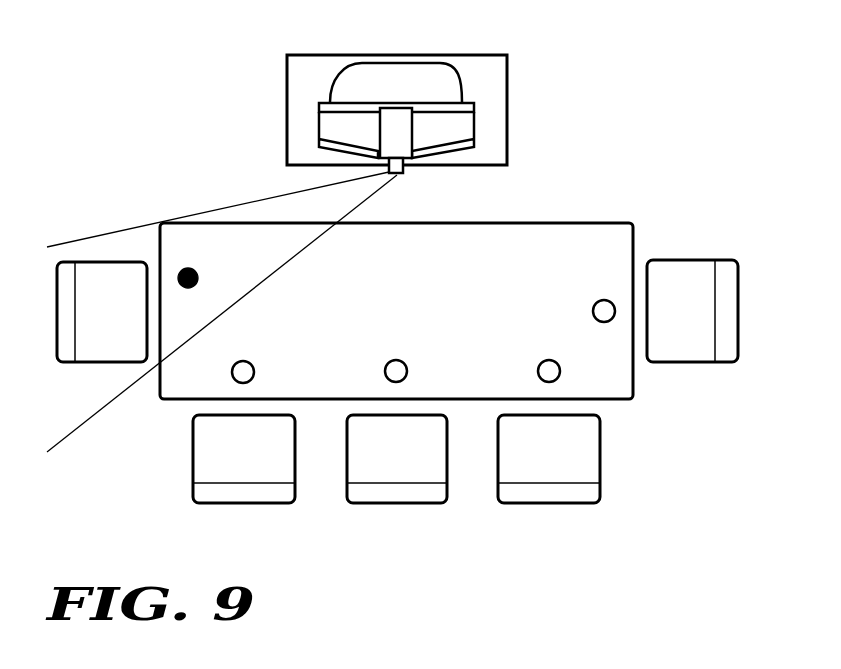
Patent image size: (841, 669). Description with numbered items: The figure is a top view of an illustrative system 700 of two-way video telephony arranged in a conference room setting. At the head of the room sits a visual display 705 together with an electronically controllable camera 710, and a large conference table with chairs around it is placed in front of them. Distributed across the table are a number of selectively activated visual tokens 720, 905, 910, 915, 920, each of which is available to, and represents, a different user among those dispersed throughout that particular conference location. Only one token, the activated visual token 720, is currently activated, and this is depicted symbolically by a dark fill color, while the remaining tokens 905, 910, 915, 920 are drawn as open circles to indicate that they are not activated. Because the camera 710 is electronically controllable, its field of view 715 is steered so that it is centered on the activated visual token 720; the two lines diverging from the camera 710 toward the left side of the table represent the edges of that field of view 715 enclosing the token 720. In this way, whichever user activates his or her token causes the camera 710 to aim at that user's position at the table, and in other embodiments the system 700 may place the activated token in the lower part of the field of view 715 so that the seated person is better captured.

The system of two-way video telephony 700 is at (418, 588).
The visual display 705 is at (320, 121).
The electronically controllable camera 710 is at (407, 130).
The field of view 715 is at (107, 230).
The activated visual token 720 is at (189, 268).
The selectively activated visual token 905 is at (243, 361).
The selectively activated visual token 910 is at (396, 360).
The selectively activated visual token 915 is at (549, 360).
The selectively activated visual token 920 is at (604, 300).